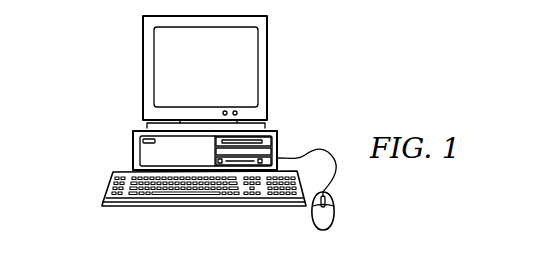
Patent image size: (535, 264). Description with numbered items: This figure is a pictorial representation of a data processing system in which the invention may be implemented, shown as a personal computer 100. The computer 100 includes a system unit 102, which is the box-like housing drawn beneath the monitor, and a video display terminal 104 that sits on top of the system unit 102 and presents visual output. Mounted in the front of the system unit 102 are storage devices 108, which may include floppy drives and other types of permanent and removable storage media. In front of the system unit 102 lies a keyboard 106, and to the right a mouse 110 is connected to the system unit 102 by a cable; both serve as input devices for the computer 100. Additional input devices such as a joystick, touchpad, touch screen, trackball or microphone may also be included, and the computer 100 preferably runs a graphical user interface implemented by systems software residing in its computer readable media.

The computer 100 is at (87, 58).
The system unit 102 is at (133, 148).
The video display terminal 104 is at (267, 68).
The keyboard 106 is at (109, 184).
The storage devices 108 is at (262, 142).
The mouse 110 is at (336, 214).